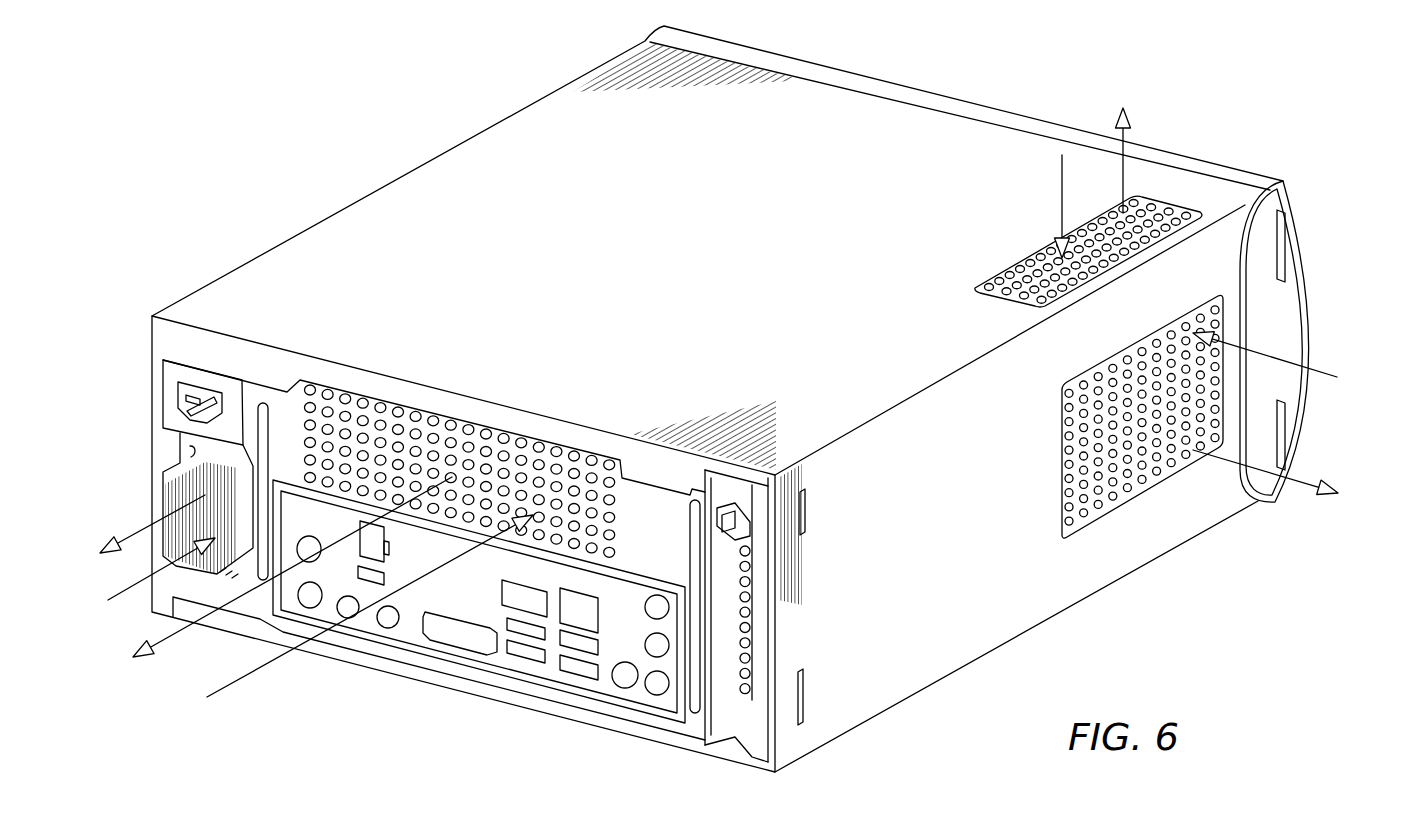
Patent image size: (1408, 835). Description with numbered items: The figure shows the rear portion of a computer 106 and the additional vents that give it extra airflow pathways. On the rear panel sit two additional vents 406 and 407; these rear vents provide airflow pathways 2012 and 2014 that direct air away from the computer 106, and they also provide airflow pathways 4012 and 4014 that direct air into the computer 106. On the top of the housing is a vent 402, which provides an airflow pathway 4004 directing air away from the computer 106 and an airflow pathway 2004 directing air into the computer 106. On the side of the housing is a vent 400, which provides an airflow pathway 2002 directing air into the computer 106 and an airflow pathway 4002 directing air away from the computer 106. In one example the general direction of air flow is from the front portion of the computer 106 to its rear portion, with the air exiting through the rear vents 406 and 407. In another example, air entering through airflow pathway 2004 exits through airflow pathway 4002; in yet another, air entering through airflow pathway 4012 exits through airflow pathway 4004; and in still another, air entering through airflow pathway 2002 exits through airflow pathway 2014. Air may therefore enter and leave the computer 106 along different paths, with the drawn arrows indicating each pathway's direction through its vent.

The computer 106 is at (507, 172).
The vent 400 is at (1110, 490).
The vent 402 is at (1170, 205).
The vent 406 is at (556, 540).
The vent 407 is at (190, 457).
The airflow pathway 2002 is at (1320, 362).
The airflow pathway 2004 is at (1058, 186).
The airflow pathway 2012 is at (190, 627).
The airflow pathway 2014 is at (140, 530).
The airflow pathway 4002 is at (1306, 498).
The airflow pathway 4004 is at (1128, 166).
The airflow pathway 4012 is at (247, 679).
The airflow pathway 4014 is at (130, 590).